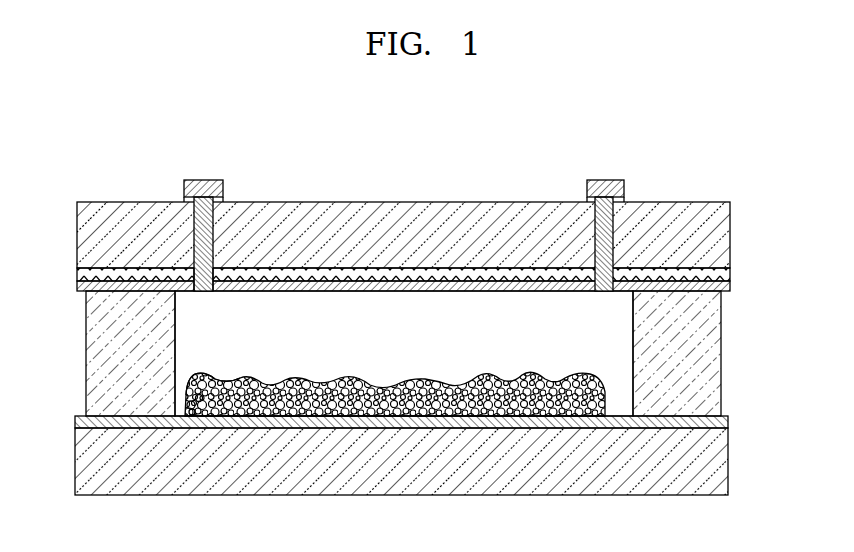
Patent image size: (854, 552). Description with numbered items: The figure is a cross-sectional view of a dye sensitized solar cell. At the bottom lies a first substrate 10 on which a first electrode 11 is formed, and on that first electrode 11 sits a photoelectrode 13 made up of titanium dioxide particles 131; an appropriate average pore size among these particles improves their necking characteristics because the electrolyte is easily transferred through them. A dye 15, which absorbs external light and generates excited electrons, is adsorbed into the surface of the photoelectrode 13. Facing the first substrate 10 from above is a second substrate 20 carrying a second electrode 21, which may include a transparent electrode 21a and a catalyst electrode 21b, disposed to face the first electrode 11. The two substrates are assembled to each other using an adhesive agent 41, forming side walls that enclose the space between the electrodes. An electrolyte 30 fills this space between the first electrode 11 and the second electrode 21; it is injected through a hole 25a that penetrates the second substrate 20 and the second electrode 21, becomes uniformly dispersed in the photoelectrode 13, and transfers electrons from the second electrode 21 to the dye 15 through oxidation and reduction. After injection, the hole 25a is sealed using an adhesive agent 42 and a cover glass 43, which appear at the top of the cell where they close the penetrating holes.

The first substrate 10 is at (729, 460).
The first electrode 11 is at (730, 420).
The photoelectrode 13 is at (604, 400).
The titanium dioxide particles 131 is at (186, 402).
The dye 15 is at (186, 383).
The second substrate 20 is at (729, 217).
The second electrode 21 is at (455, 278).
The transparent electrode 21a is at (729, 273).
The catalyst electrode 21b is at (729, 287).
The hole 25a is at (191, 258).
The electrolyte 30 is at (402, 305).
The adhesive agent 41 is at (716, 338).
The adhesive agent 42 is at (192, 230).
The cover glass 43 is at (206, 184).